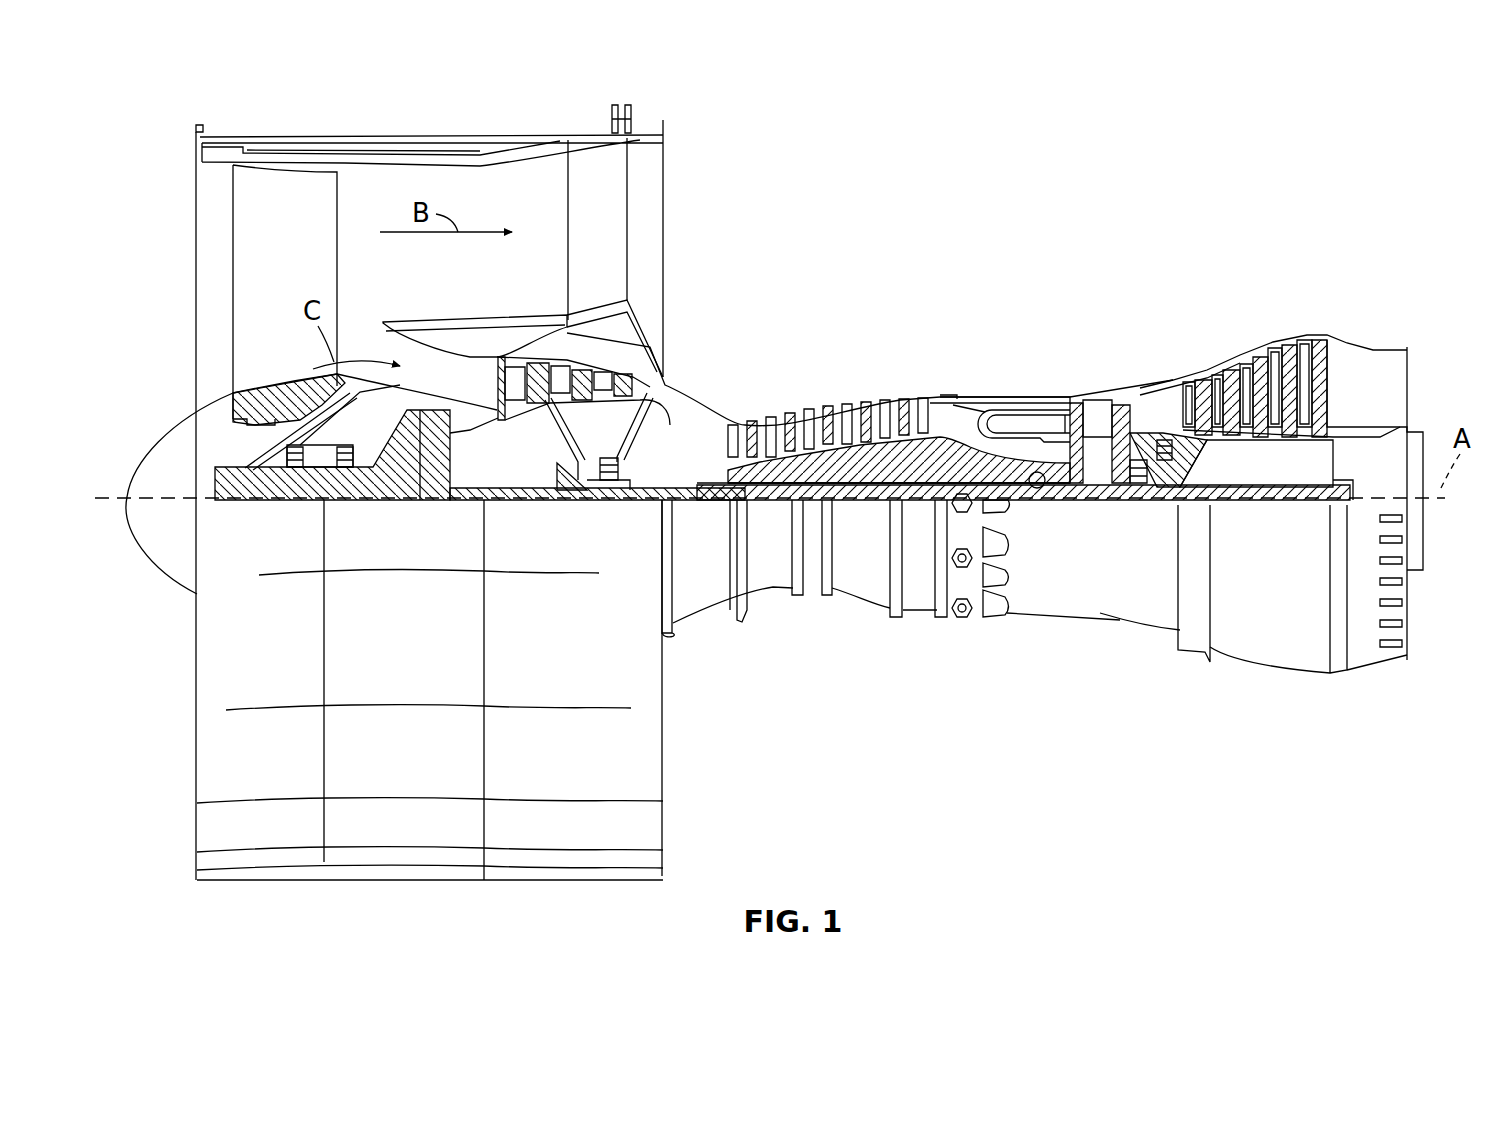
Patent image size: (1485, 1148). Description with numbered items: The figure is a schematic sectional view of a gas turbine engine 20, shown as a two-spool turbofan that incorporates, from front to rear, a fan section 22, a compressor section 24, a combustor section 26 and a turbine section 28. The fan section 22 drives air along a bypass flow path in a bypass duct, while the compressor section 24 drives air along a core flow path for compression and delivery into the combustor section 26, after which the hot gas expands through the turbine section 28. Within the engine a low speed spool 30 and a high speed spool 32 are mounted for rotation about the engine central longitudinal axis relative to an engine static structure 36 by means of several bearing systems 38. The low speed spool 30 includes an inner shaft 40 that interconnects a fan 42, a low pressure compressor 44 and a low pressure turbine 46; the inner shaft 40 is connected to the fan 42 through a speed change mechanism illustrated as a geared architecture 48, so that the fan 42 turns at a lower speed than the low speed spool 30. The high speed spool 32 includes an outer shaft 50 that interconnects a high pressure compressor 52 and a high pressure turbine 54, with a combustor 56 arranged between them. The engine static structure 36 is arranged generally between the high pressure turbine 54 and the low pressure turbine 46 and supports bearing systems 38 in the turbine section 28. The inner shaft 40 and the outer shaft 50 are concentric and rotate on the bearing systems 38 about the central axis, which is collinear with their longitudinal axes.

The gas turbine engine 20 is at (1280, 150).
The fan section 22 is at (298, 130).
The compressor section 24 is at (836, 308).
The combustor section 26 is at (1035, 290).
The turbine section 28 is at (1184, 282).
The low speed spool 30 is at (881, 503).
The high speed spool 32 is at (950, 406).
The engine static structure 36 is at (921, 617).
The bearing systems 38 is at (288, 470).
The inner shaft 40 is at (686, 503).
The fan 42 is at (266, 283).
The low pressure compressor 44 is at (578, 377).
The low pressure turbine 46 is at (1273, 344).
The geared architecture 48 is at (428, 492).
The outer shaft 50 is at (1045, 490).
The high pressure compressor 52 is at (830, 467).
The high pressure turbine 54 is at (1100, 390).
The combustor 56 is at (1028, 418).